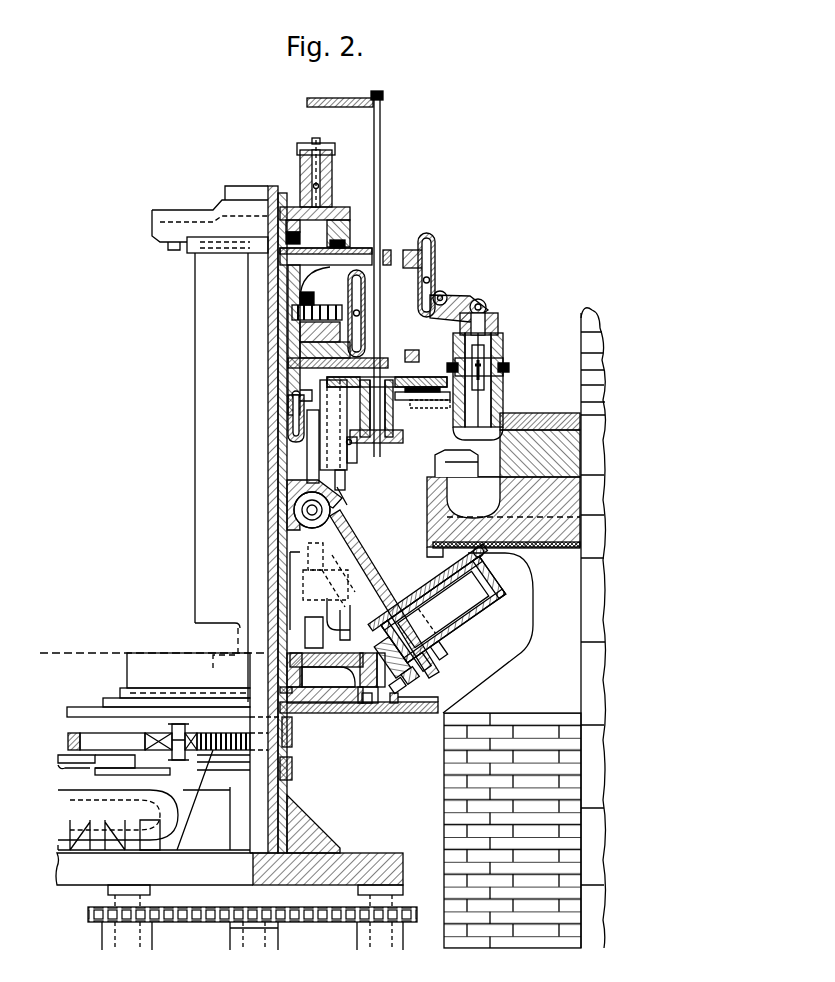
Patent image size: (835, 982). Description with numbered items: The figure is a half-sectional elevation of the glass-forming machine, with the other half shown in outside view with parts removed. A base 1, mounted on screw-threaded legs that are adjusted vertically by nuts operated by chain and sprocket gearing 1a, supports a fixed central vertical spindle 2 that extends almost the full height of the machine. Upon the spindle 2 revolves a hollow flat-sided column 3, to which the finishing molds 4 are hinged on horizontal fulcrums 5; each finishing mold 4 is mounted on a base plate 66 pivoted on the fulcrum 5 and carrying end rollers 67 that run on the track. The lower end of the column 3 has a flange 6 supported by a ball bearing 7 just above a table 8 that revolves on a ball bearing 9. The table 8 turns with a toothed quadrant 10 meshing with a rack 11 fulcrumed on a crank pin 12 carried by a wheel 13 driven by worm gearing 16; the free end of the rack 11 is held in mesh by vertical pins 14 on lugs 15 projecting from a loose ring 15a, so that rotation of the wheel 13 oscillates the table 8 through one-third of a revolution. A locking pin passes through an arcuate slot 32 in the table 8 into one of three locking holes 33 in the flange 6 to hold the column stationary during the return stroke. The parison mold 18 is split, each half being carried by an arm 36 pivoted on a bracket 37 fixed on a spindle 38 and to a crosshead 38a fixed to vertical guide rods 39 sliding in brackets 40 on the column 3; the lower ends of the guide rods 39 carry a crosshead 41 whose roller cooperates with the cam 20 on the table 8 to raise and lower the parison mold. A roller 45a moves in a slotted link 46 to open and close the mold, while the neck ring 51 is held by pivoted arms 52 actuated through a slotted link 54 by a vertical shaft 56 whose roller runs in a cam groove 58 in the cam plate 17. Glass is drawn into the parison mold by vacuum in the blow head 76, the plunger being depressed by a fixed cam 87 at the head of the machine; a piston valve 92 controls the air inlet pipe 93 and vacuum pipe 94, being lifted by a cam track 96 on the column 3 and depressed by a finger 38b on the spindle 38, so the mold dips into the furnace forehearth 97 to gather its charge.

The base 1 is at (360, 855).
The chain and sprocket gearing 1a is at (314, 923).
The central vertical spindle 2 is at (271, 192).
The column 3 is at (200, 412).
The finishing mold 4 is at (455, 628).
The horizontal fulcrum 5 is at (322, 510).
The flange 6 is at (320, 703).
The ball bearing 7 is at (300, 712).
The table 8 is at (400, 714).
The ball bearing 9 is at (292, 766).
The toothed quadrant 10 is at (215, 748).
The rack 11 is at (114, 738).
The crank pin 12 is at (74, 740).
The wheel 13 is at (150, 772).
The vertical pins 14 is at (168, 738).
The lugs 15 is at (198, 733).
The loose ring 15a is at (292, 724).
The worm gearing 16 is at (150, 806).
The cam plate 17 is at (318, 668).
The parison mold 18 is at (503, 408).
The cam 20 is at (372, 665).
The arcuate slot 32 is at (376, 704).
The locking holes 33 is at (366, 704).
The arm 36 is at (404, 386).
The bracket 37 is at (398, 422).
The spindle 38 is at (382, 210).
The crosshead 38a is at (357, 450).
The finger 38b is at (308, 100).
The vertical guide rods 39 is at (340, 488).
The brackets 40 is at (338, 580).
The crosshead 41 is at (344, 621).
The roller 45a is at (268, 396).
The slotted link 46 is at (268, 433).
The neck ring 51 is at (508, 366).
The pivoted arms 52 is at (392, 392).
The slotted link 54 is at (366, 295).
The vertical shaft 56 is at (312, 460).
The cam groove 58 is at (400, 672).
The base plate 66 is at (430, 648).
The end rollers 67 is at (418, 668).
The blow head 76 is at (500, 330).
The fixed cam 87 is at (160, 246).
The piston valve 92 is at (326, 164).
The air inlet pipe 93 is at (312, 168).
The vacuum pipe 94 is at (320, 186).
The cam track 96 is at (190, 252).
The furnace forehearth 97 is at (503, 563).